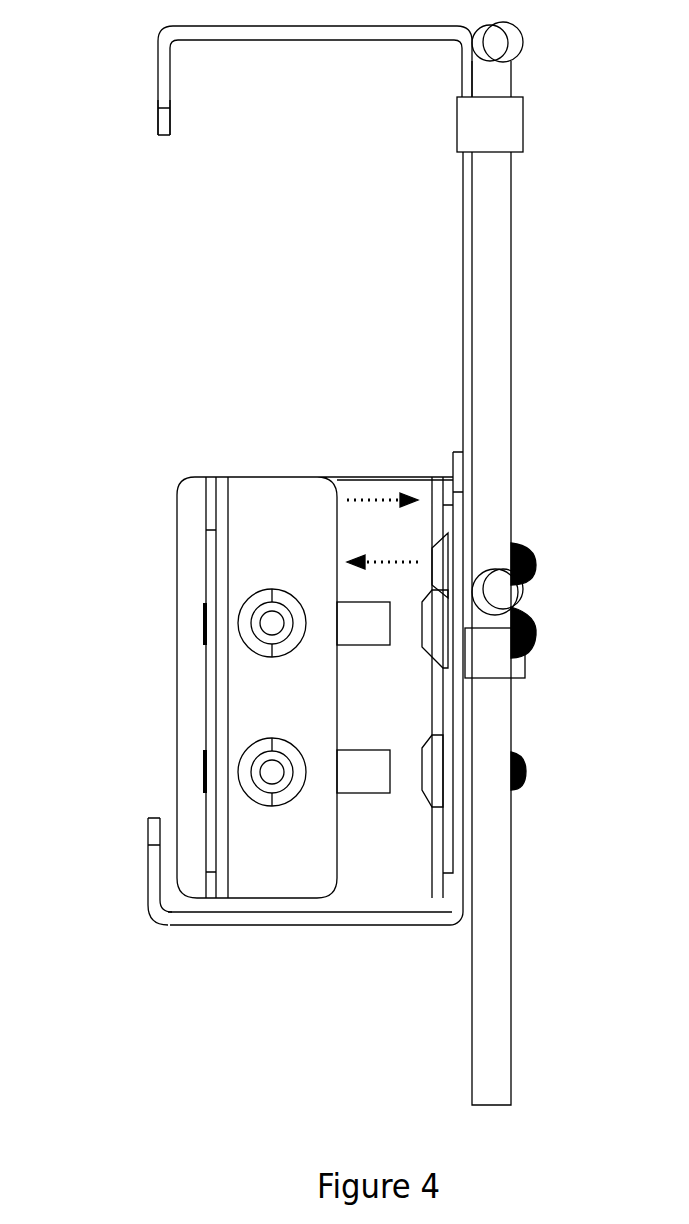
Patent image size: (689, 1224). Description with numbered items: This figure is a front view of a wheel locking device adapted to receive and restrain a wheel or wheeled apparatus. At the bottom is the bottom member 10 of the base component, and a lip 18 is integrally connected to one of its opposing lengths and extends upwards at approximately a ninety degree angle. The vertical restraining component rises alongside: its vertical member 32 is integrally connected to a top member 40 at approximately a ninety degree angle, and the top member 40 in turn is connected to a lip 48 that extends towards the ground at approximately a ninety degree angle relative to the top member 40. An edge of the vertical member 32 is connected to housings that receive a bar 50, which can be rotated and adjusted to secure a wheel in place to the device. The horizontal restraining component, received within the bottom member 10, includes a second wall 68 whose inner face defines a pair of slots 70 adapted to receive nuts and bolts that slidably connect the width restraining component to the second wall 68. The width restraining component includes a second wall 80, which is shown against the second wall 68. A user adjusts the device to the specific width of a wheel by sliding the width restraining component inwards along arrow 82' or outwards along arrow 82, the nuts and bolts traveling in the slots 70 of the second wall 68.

The bottom member 10 is at (208, 925).
The lip 18 is at (148, 862).
The vertical member 32 is at (463, 287).
The top member 40 is at (318, 35).
The lip 48 is at (160, 90).
The bar 50 is at (492, 423).
The second wall 68 is at (412, 870).
The slots 70 is at (372, 630).
The second wall 80 is at (257, 545).
The arrow 82 is at (321, 490).
The arrow 82' is at (379, 453).